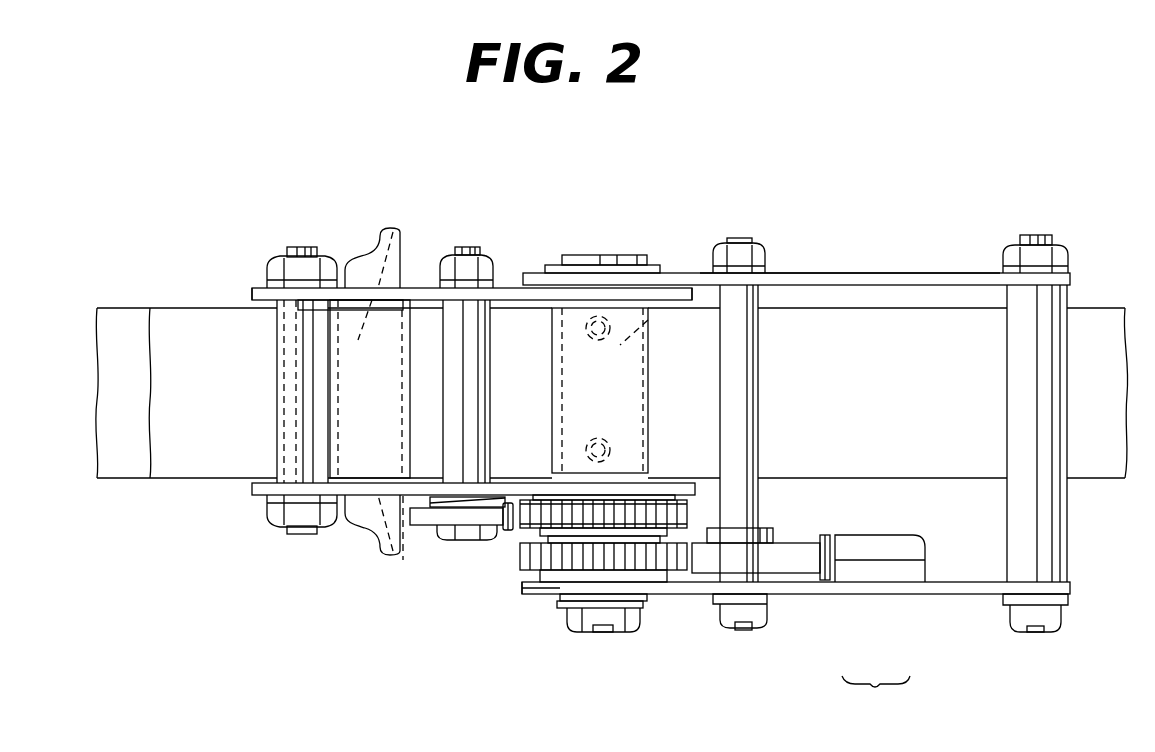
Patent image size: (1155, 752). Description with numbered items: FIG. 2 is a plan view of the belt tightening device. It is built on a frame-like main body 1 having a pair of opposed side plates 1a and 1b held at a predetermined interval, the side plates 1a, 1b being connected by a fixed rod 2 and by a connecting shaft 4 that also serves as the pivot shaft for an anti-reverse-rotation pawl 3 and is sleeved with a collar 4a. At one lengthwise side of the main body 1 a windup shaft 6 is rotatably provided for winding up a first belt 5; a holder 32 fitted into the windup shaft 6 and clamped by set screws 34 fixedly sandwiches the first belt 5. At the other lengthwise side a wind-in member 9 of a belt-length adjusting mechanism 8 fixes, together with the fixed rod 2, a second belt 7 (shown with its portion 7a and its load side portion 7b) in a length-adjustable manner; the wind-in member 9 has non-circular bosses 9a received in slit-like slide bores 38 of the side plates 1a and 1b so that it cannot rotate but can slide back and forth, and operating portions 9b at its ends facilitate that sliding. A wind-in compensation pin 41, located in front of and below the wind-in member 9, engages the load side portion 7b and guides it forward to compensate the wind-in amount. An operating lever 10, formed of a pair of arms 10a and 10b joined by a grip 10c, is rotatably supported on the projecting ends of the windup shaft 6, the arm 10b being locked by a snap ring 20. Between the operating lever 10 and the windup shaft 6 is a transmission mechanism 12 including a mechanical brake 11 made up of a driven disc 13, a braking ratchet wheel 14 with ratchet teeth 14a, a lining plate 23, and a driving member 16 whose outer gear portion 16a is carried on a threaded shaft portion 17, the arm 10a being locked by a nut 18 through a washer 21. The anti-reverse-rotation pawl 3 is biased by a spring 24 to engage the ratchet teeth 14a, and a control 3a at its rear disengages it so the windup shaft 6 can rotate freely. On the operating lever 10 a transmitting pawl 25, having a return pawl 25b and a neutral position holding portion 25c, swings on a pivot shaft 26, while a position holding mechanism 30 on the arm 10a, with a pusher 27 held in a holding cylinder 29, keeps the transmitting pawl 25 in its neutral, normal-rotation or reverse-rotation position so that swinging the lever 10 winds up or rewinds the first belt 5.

The main body 1 is at (692, 286).
The side plate 1a is at (255, 504).
The side plate 1b is at (250, 294).
The fixed rod 2 is at (268, 422).
The anti-reverse-rotation pawl 3 is at (475, 515).
The control 3a is at (428, 520).
The connecting shaft 4 is at (470, 255).
The collar 4a is at (500, 310).
The first belt 5 is at (915, 307).
The windup shaft 6 is at (590, 257).
The second belt 7 is at (125, 305).
The belt seam 7a is at (175, 315).
The load side portion 7b is at (112, 325).
The belt-length adjusting mechanism 8 is at (345, 250).
The wind-in member 9 is at (445, 290).
The bosses 9a is at (372, 300).
The operating portions 9b is at (385, 235).
The operating lever 10 is at (1078, 262).
The arm 10a is at (985, 598).
The arm 10b is at (845, 274).
The grip 10c is at (1060, 300).
The mechanical brake 11 is at (515, 578).
The transmission mechanism 12 is at (685, 582).
The driven disc 13 is at (645, 496).
The braking ratchet wheel 14 is at (660, 505).
The ratchet teeth 14a is at (548, 505).
The driving member 16 is at (652, 560).
The gear portion 16a is at (665, 567).
The threaded shaft portion 17 is at (563, 600).
The nut 18 is at (633, 630).
The snap ring 20 is at (658, 262).
The washer 21 is at (600, 610).
The lining plate 23 is at (655, 532).
The spring 24 is at (453, 515).
The transmitting pawl 25 is at (795, 545).
The return pawl 25b is at (712, 530).
The neutral position holding portion 25c is at (812, 566).
The pivot shaft 26 is at (752, 356).
The pusher 27 is at (828, 572).
The holding cylinder 29 is at (888, 562).
The position holding mechanism 30 is at (876, 703).
The holder 32 is at (645, 318).
The set screws 34 is at (600, 318).
The slide bores 38 is at (410, 300).
The wind-in compensation pin 41 is at (272, 500).